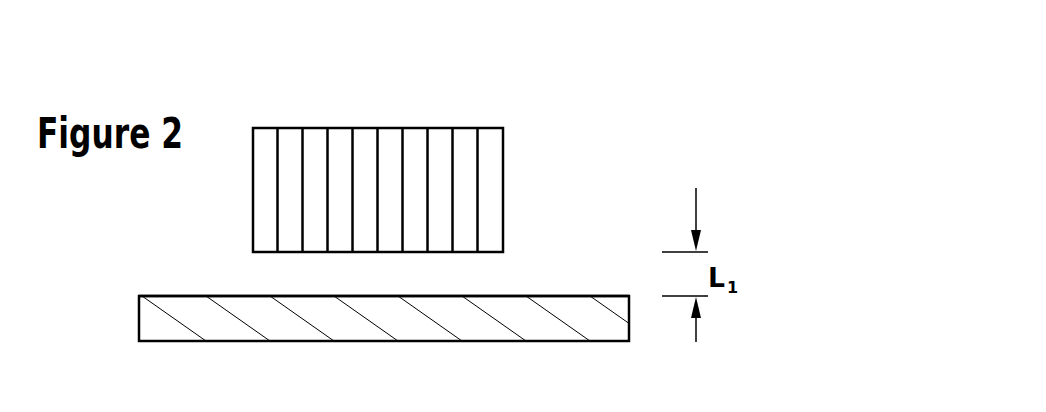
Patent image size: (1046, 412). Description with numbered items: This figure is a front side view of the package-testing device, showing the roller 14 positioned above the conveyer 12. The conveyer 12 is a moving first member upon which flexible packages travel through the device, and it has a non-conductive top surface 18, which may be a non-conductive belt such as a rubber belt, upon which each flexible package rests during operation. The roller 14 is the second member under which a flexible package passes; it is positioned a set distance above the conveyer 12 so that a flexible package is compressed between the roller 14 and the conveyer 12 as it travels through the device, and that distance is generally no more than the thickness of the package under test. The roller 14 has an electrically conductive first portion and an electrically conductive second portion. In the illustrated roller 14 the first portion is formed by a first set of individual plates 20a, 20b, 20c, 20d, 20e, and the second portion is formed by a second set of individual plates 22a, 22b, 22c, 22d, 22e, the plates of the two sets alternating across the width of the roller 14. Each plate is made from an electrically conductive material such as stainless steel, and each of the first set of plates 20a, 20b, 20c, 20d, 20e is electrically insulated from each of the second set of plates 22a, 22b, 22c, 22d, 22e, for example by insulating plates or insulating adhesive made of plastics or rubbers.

The conveyer 12 is at (139, 316).
The roller 14 is at (503, 190).
The non-conductive top surface 18 is at (158, 278).
The first set individual plate 20a is at (264, 128).
The first set individual plate 20b is at (311, 252).
The first set individual plate 20c is at (368, 252).
The first set individual plate 20d is at (413, 252).
The first set individual plate 20e is at (467, 252).
The second set individual plate 22a is at (283, 128).
The second set individual plate 22b is at (334, 128).
The second set individual plate 22c is at (384, 128).
The second set individual plate 22d is at (434, 128).
The second set individual plate 22e is at (485, 128).